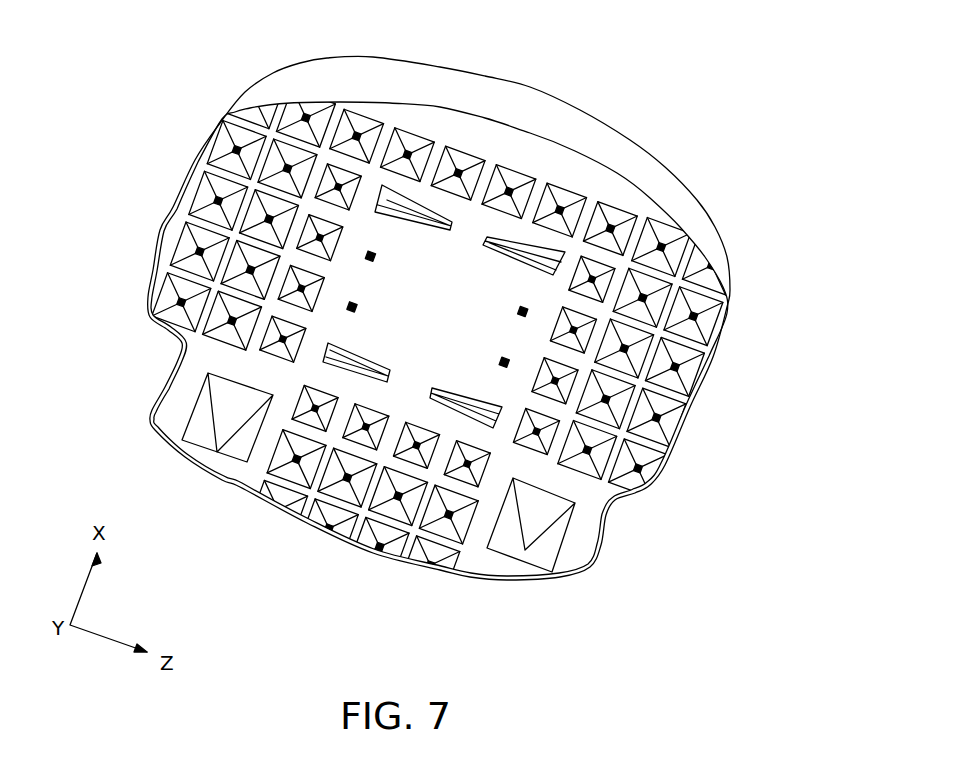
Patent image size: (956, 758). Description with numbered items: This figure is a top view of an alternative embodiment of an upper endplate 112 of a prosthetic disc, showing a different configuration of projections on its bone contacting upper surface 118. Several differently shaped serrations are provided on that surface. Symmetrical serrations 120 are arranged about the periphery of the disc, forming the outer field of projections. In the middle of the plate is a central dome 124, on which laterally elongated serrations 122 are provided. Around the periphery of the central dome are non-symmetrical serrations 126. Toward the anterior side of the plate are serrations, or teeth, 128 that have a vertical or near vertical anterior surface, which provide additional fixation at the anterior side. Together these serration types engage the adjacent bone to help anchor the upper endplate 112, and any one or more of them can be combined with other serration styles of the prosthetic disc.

The upper endplate 112 is at (750, 190).
The bone contacting upper surface 118 is at (557, 175).
The symmetrical serrations 120 is at (712, 322).
The laterally elongated serrations 122 is at (434, 389).
The central dome 124 is at (455, 287).
The non-symmetrical serrations 126 is at (473, 170).
The serrations with a vertical or near vertical anterior surface 128 is at (218, 448).